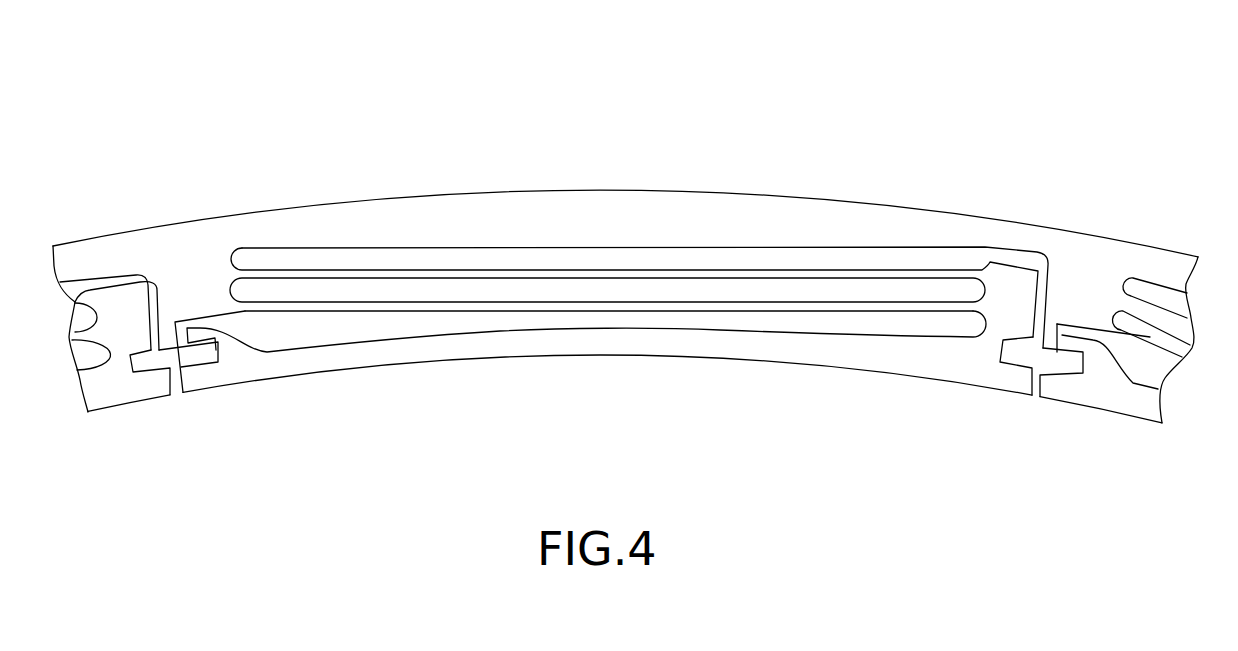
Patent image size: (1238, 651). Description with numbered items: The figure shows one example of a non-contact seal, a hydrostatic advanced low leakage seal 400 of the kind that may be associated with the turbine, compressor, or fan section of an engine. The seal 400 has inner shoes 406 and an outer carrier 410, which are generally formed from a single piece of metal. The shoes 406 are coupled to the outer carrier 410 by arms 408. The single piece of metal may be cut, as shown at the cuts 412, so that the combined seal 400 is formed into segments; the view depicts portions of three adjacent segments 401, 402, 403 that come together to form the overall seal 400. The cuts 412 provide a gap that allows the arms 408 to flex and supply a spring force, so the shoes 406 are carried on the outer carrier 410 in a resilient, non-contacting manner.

The seal 400 is at (900, 97).
The segment 401 is at (155, 385).
The segment 402 is at (520, 343).
The segment 403 is at (1135, 403).
The inner shoes 406 is at (115, 395).
The arms 408 is at (563, 302).
The outer carrier 410 is at (185, 240).
The cuts 412 is at (367, 312).